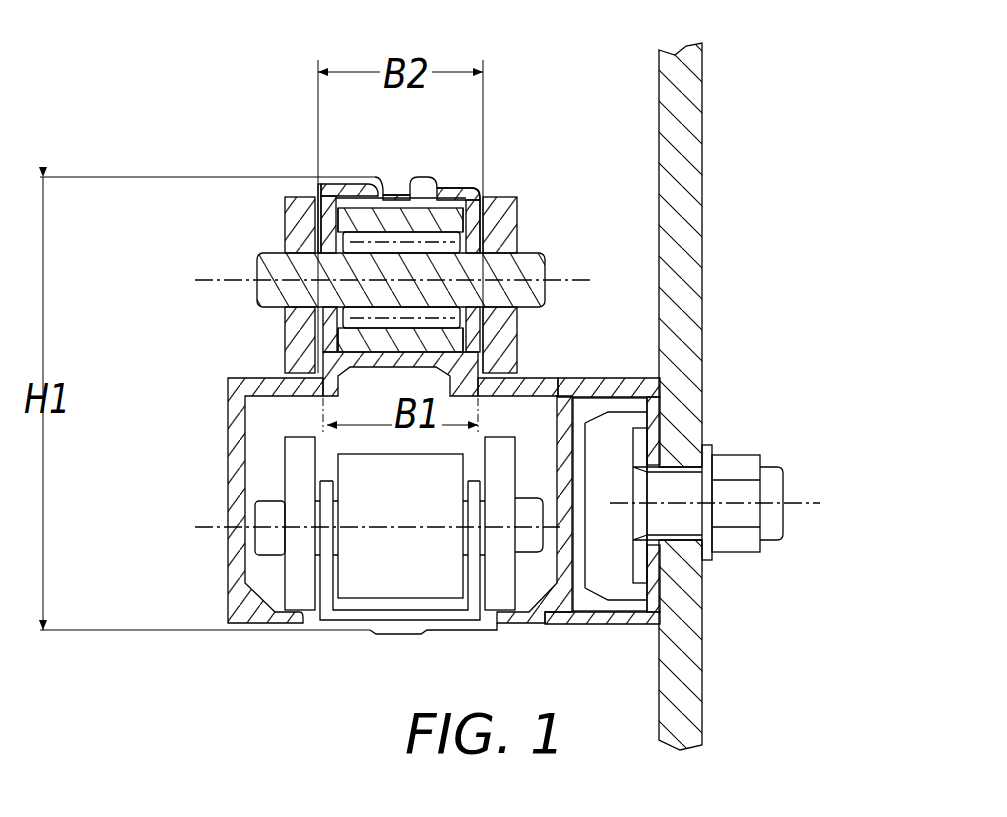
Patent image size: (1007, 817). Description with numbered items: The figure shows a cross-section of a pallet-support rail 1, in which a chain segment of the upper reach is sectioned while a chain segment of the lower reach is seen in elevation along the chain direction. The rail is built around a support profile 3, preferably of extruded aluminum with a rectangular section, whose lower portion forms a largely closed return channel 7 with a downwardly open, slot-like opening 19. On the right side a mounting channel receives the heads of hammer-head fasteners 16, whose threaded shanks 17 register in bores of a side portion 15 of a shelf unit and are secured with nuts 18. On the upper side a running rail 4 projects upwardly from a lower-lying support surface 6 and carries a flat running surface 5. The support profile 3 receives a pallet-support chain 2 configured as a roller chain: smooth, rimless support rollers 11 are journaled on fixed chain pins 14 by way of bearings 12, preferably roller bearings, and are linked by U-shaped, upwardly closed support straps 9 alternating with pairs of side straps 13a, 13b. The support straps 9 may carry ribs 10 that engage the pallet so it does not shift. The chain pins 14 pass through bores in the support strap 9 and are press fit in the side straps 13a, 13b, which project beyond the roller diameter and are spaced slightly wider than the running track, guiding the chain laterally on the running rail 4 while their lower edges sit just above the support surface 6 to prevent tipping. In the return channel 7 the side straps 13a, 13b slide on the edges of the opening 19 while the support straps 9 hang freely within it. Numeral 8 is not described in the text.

The pallet-support rail 1 is at (196, 490).
The pallet-support chain 2 is at (222, 195).
The support profile 3 is at (232, 400).
The running rail 4 is at (372, 381).
The running surface 5 is at (520, 327).
The support surface 6 is at (612, 378).
The return channel 7 is at (262, 575).
The elastic insert 8 is at (588, 603).
The support strap 9 is at (322, 190).
The rib 10 is at (377, 180).
The support roller 11 is at (430, 217).
The bearing 12 is at (490, 203).
The side strap 13a is at (283, 347).
The side strap 13b is at (510, 225).
The chain pin 14 is at (268, 278).
The side portion 15 is at (685, 100).
The hammer-head fastener 16 is at (610, 458).
The threaded shank 17 is at (776, 485).
The nut 18 is at (737, 543).
The opening 19 is at (310, 622).